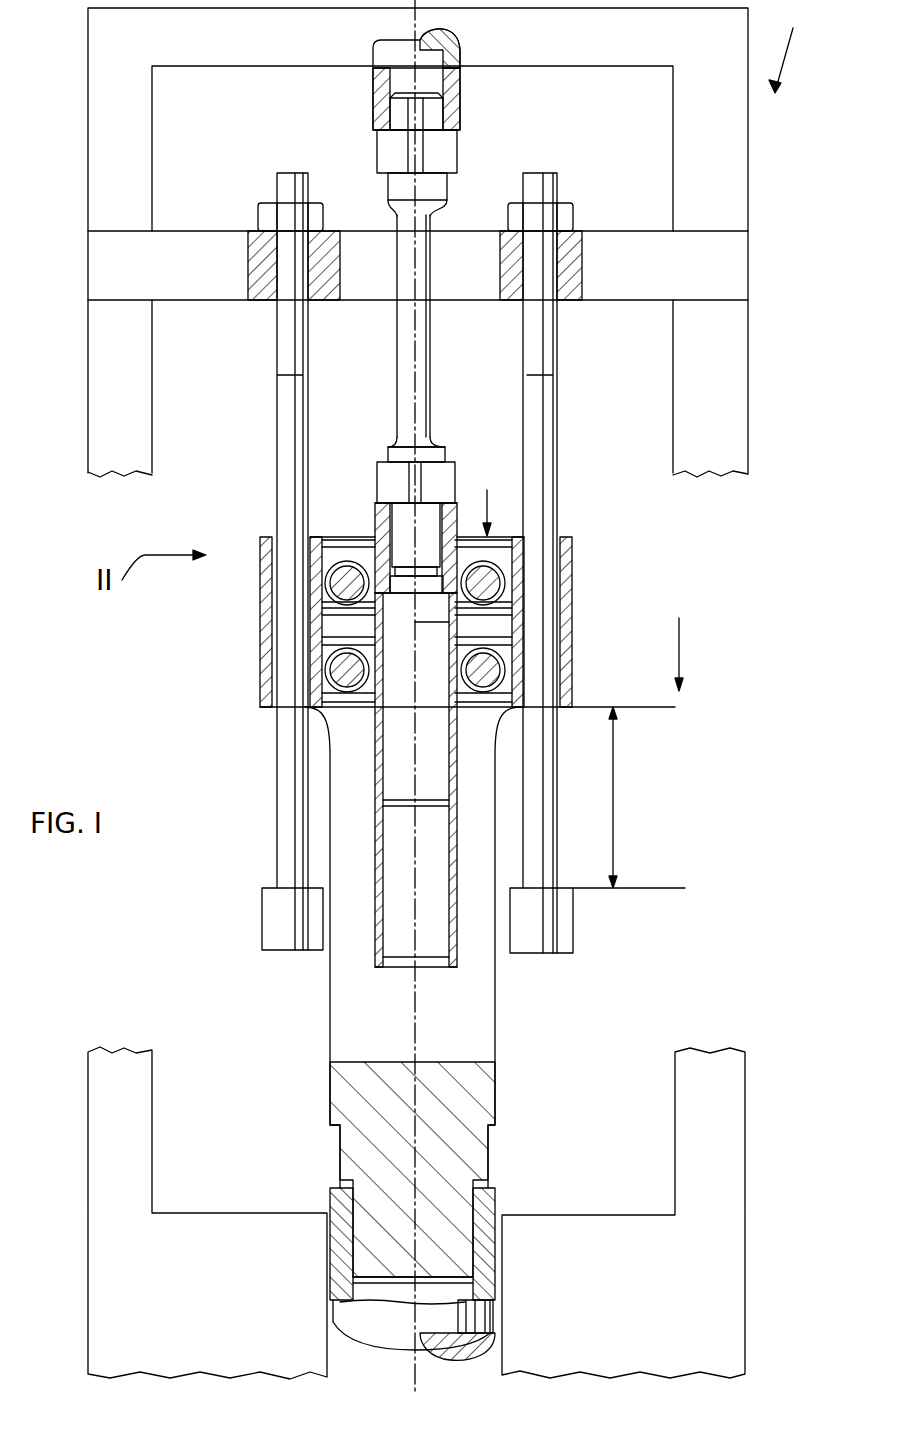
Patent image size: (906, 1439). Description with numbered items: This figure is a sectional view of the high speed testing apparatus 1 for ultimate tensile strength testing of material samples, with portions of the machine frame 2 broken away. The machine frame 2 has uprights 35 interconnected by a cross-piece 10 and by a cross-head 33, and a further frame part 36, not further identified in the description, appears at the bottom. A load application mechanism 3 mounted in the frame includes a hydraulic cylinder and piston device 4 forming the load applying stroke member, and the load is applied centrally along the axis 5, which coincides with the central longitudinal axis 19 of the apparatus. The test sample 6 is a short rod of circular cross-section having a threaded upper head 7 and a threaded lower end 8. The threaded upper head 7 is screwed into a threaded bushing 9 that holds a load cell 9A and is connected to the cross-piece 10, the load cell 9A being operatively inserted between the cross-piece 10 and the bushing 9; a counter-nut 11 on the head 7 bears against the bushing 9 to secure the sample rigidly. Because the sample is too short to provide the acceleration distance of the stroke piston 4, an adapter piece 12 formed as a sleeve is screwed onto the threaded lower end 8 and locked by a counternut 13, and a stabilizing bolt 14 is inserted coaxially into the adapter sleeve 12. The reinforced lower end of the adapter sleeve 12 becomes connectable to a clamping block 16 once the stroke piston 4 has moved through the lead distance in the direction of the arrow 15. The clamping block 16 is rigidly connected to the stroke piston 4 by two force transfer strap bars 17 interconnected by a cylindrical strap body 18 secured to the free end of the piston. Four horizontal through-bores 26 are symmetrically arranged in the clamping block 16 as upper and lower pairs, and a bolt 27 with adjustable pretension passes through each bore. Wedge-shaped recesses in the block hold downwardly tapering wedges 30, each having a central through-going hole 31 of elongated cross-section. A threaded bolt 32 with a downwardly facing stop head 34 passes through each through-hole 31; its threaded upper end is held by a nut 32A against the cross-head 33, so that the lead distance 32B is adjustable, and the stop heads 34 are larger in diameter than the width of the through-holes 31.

The high speed testing apparatus 1 is at (786, 46).
The machine frame 2 is at (712, 203).
The load application mechanism 3 is at (497, 1325).
The hydraulic cylinder and piston device 4 is at (345, 1318).
The axis 5 is at (480, 1247).
The test sample 6 is at (420, 340).
The threaded upper head 7 is at (395, 183).
The threaded lower end 8 is at (420, 552).
The threaded bushing 9 is at (373, 102).
The load cell 9A is at (443, 97).
The cross-piece 10 is at (598, 40).
The counter-nut 11 is at (440, 152).
The adapter piece 12 is at (380, 525).
The counternut 13 is at (395, 483).
The stabilizing bolt 14 is at (395, 858).
The arrow 15 is at (680, 650).
The clamping block 16 is at (493, 493).
The force transfer strap bars 17 is at (368, 1022).
The cylindrical strap body 18 is at (378, 1108).
The central longitudinal axis 19 is at (440, 623).
The horizontal through-bores 26 is at (330, 583).
The bolt 27 is at (330, 668).
The wedge 30 is at (263, 628).
The through-going hole 31 is at (268, 708).
The threaded bolt 32 is at (290, 412).
The nut 32A is at (262, 215).
The lead distance 32B is at (615, 805).
The cross-head 33 is at (120, 262).
The stop head 34 is at (295, 920).
The uprights 35 is at (125, 380).
The base wall 36 is at (690, 1287).